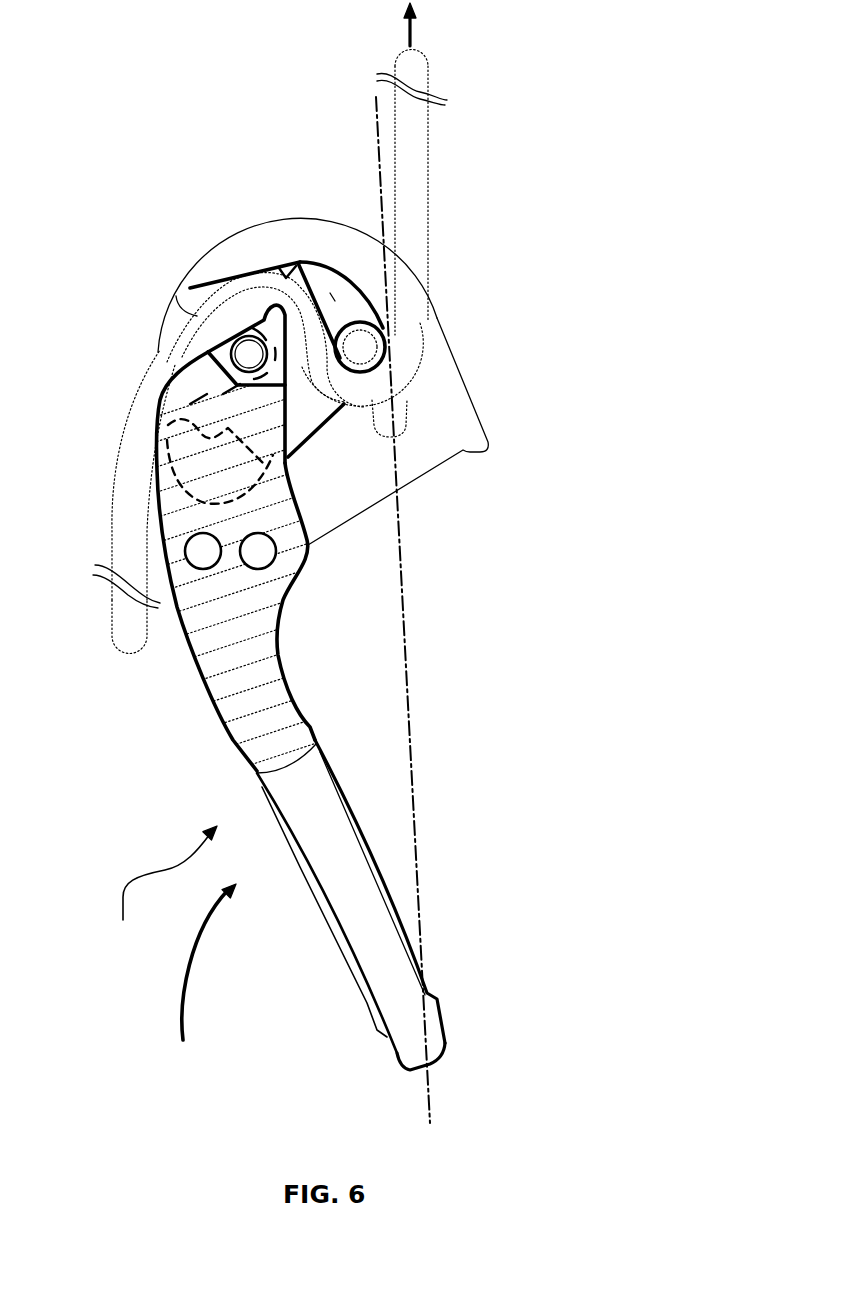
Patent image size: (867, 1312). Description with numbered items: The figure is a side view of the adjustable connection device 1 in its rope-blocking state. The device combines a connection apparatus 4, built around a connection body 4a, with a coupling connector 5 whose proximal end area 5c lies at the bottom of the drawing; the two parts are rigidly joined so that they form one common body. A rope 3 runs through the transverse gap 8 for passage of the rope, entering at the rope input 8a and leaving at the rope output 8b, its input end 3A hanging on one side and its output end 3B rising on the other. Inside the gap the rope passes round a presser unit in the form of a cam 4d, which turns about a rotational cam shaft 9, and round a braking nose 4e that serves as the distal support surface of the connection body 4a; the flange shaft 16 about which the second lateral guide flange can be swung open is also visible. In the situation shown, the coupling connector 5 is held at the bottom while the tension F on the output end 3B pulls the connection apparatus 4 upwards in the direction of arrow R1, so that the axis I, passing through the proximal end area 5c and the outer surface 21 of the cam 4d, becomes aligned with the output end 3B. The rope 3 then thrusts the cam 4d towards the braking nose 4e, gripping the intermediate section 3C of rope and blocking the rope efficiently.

The adjustable connection device 1 is at (167, 886).
The rope 3 is at (127, 631).
The input end of the rope 3A is at (125, 535).
The output end of the rope 3B is at (420, 190).
The intermediate section of rope 3C is at (303, 308).
The connection apparatus 4 is at (148, 283).
The connection body 4a is at (205, 663).
The cam 4d is at (338, 293).
The braking nose 4e is at (267, 322).
The coupling connector 5 is at (400, 882).
The proximal end area of the connector body 5c is at (437, 1050).
The transverse gap for passage of the rope 8 is at (320, 425).
The rope input 8a is at (240, 251).
The rope output 8b is at (478, 415).
The rotational cam shaft 9 is at (155, 440).
The flange shaft 16 is at (261, 556).
The outer surface of the cam 21 is at (377, 322).
The tension F is at (411, 26).
The arrow indicating upward pivoting R1 is at (178, 979).
The axis I- I is at (405, 610).